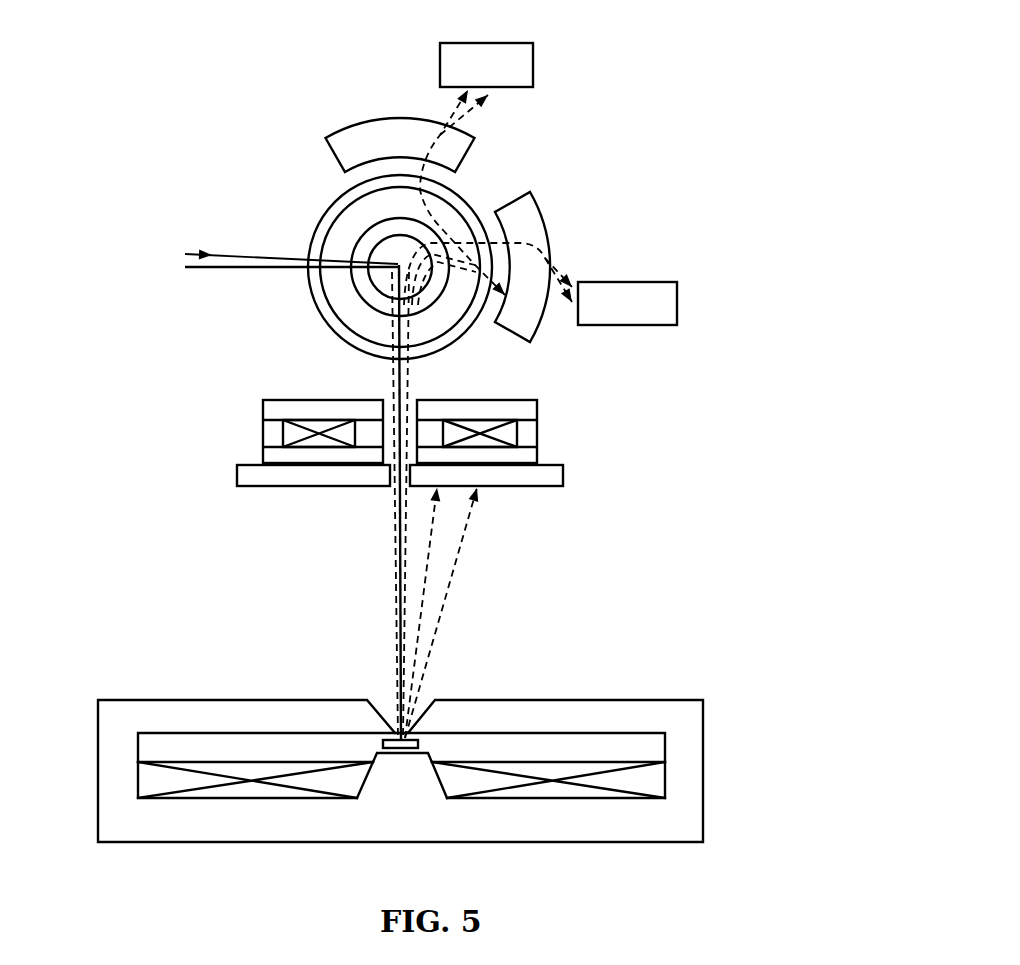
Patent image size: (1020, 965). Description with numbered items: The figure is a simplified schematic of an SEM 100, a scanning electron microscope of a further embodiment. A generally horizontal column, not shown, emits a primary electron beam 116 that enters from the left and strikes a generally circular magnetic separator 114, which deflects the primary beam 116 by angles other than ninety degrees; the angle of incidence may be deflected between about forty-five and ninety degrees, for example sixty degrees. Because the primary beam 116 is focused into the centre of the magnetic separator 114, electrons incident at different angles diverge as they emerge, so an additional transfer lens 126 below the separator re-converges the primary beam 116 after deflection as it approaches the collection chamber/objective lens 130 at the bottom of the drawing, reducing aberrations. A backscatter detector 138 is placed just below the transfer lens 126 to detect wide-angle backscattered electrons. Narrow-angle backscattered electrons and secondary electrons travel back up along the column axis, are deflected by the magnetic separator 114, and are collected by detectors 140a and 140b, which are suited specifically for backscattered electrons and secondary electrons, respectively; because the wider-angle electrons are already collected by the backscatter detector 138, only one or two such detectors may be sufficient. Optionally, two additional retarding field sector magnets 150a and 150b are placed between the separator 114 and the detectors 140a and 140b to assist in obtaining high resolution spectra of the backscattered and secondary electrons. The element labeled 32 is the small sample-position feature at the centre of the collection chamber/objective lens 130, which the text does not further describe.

The SEM 100 is at (178, 82).
The primary electron beam 116 is at (287, 260).
The retarding field sector magnet 150b is at (372, 138).
The detector 140b is at (520, 67).
The retarding field sector magnet 150a is at (527, 220).
The detector 140a is at (667, 305).
The transfer lens 126 is at (520, 412).
The backscatter detector 138 is at (243, 475).
The collection chamber/objective lens 130 is at (687, 748).
The sample 32 is at (383, 743).
The magnetic separator 114 is at (235, 957).